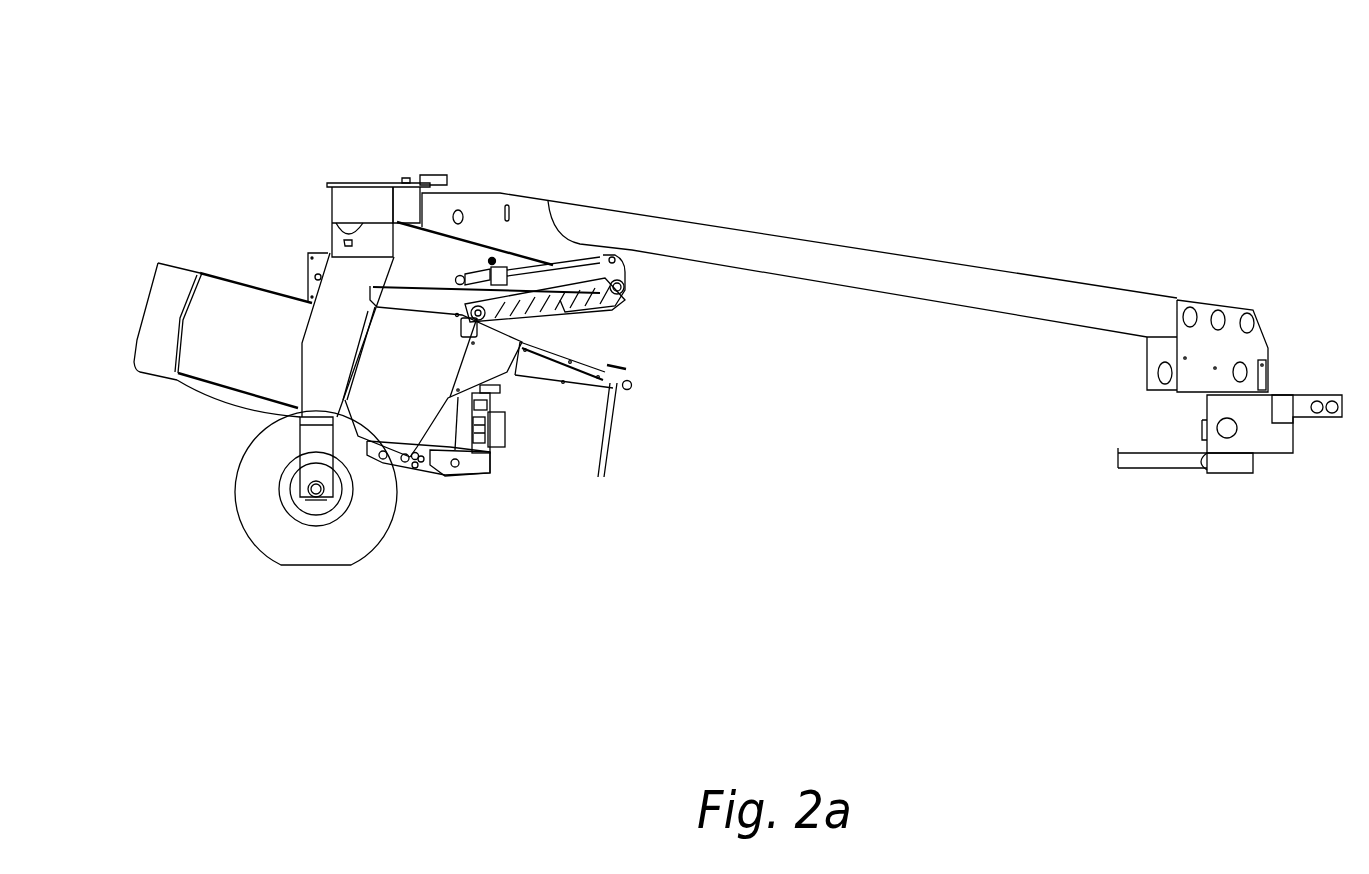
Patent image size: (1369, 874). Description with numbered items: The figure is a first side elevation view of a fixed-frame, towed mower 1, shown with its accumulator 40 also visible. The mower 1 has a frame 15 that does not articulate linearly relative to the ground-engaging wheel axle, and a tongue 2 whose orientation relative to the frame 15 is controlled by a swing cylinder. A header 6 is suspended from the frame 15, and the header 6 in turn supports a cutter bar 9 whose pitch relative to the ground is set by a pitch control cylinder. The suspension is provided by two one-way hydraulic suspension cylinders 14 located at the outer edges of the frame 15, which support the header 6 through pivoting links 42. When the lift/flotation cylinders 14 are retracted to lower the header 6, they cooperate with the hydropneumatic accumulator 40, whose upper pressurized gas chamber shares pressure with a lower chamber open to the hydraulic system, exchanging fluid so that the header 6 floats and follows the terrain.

The towed mower 1 is at (665, 72).
The tongue 2 is at (935, 272).
The header 6 is at (599, 352).
The cutter bar 9 is at (465, 480).
The hydraulic suspension cylinders 14 is at (520, 257).
The frame 15 is at (327, 316).
The accumulator 40 is at (343, 230).
The pivoting links 42 is at (622, 273).